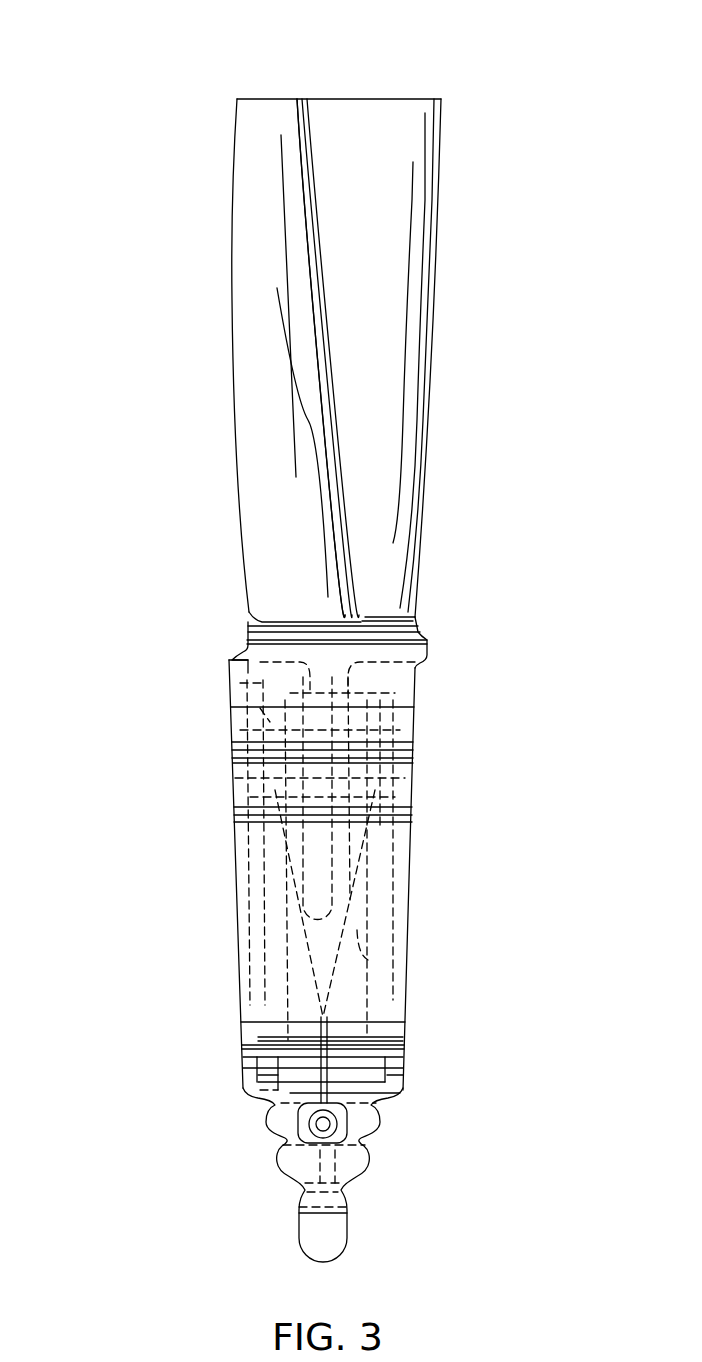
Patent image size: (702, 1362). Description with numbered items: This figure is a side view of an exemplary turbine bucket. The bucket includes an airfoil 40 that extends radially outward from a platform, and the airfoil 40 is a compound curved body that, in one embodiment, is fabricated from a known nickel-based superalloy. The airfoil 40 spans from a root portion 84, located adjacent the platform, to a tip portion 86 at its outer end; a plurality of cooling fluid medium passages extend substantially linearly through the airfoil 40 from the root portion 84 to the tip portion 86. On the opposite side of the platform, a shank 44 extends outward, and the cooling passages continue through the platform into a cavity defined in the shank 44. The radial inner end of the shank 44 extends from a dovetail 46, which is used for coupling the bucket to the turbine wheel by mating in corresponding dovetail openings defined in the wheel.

The airfoil 40 is at (232, 267).
The tip portion 86 is at (300, 98).
The root portion 84 is at (262, 622).
The shank 44 is at (237, 897).
The dovetail 46 is at (275, 1150).